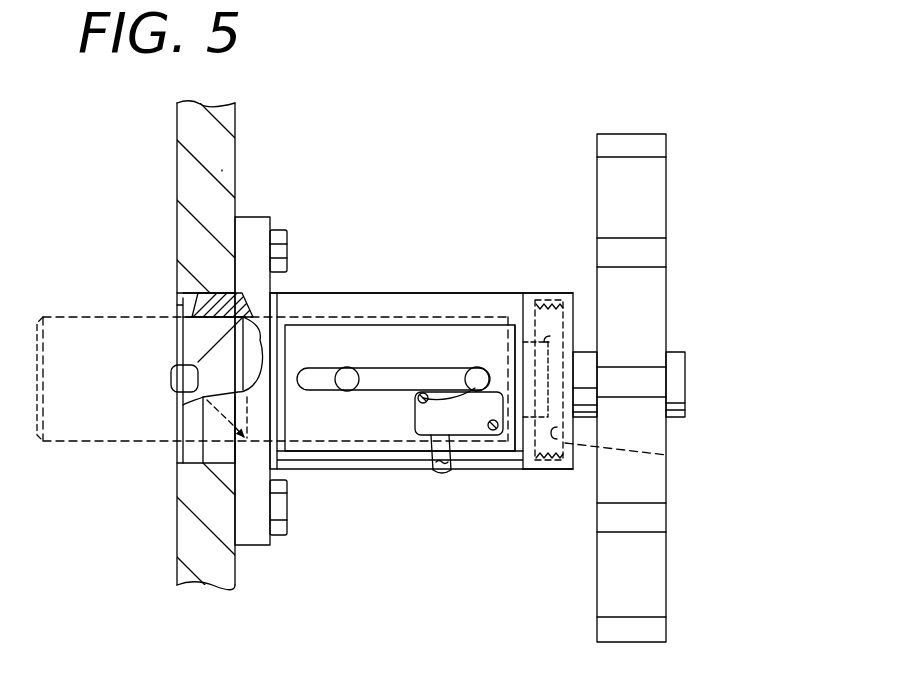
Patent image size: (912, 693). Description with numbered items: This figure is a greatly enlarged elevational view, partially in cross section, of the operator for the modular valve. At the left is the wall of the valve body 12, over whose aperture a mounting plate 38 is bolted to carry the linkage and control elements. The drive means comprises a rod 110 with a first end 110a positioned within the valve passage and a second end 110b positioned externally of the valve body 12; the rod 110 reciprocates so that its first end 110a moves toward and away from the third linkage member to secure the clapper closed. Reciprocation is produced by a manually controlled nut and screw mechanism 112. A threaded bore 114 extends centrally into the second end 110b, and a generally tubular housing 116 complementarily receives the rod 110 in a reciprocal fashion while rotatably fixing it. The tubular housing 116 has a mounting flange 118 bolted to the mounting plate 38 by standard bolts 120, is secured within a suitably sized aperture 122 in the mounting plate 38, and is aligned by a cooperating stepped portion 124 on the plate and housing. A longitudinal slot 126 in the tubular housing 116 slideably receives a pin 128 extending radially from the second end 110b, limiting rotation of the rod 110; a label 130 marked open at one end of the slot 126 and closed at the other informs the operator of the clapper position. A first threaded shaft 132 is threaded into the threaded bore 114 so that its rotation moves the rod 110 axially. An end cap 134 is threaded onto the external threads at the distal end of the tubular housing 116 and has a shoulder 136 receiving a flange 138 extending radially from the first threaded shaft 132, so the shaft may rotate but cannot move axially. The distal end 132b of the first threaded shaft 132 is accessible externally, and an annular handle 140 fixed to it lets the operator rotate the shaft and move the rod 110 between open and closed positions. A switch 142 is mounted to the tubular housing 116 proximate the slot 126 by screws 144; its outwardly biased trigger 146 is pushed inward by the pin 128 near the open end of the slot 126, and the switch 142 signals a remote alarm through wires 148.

The valve body 12 is at (227, 122).
The mounting plate 38 is at (222, 170).
The rod 110 is at (260, 333).
The first end 110a is at (177, 377).
The second end 110b is at (508, 317).
The nut and screw mechanism 112 is at (430, 222).
The threaded bore 114 is at (528, 428).
The tubular housing 116 is at (367, 463).
The mounting flange 118 is at (257, 545).
The bolts 120 is at (277, 232).
The aperture 122 is at (178, 308).
The stepped portion 124 is at (200, 292).
The longitudinal slot 126 is at (428, 358).
The pin 128 is at (465, 388).
The label 130 is at (315, 451).
The first threaded shaft 132 is at (583, 358).
The distal end 132b is at (677, 378).
The end cap 134 is at (560, 470).
The shoulder 136 is at (538, 293).
The flange 138 is at (667, 455).
The annular handle 140 is at (653, 278).
The switch 142 is at (413, 430).
The screws 144 is at (478, 435).
The trigger 146 is at (421, 398).
The wires 148 is at (432, 470).